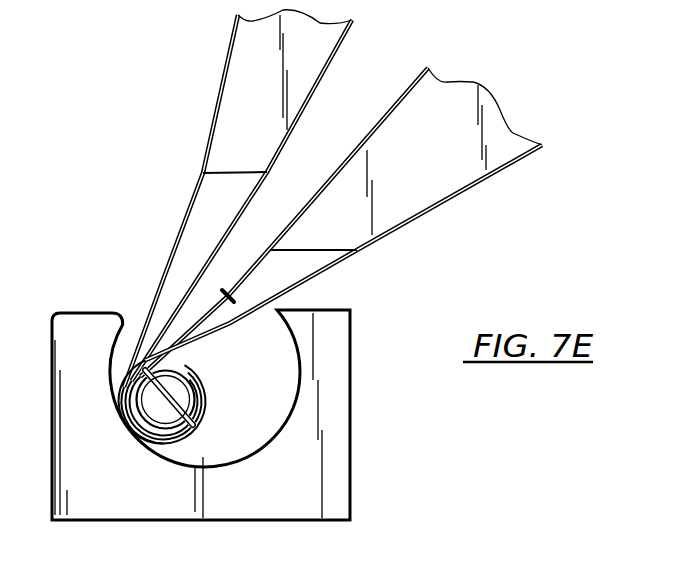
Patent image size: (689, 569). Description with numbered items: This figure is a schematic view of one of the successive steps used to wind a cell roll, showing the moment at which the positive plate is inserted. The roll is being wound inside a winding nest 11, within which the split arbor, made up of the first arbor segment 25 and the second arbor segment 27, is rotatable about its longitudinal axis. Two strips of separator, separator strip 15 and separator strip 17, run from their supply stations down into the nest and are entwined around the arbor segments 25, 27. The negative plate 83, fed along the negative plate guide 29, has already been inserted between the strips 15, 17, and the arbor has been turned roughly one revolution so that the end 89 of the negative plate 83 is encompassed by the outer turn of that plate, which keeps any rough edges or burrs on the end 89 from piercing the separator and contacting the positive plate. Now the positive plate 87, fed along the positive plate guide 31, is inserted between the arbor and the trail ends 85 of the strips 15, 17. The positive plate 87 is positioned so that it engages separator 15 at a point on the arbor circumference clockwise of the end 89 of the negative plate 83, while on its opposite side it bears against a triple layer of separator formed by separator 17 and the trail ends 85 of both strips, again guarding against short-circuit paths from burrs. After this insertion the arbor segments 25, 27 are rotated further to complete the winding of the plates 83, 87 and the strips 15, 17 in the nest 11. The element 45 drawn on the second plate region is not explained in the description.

The housing block 11 is at (337, 432).
The first strap panel edge 15 is at (193, 197).
The second strap panel edge 17 is at (257, 262).
The core rod 25 is at (153, 412).
The slotted tube 27 is at (182, 397).
The first panel 29 is at (328, 68).
The second panel 31 is at (455, 200).
The second panel corner section 45 is at (378, 138).
The first panel inner edge 83 is at (217, 242).
The hinge pin segment 85 is at (228, 296).
The second panel lower edge 87 is at (318, 282).
The wrap start point 89 is at (165, 362).